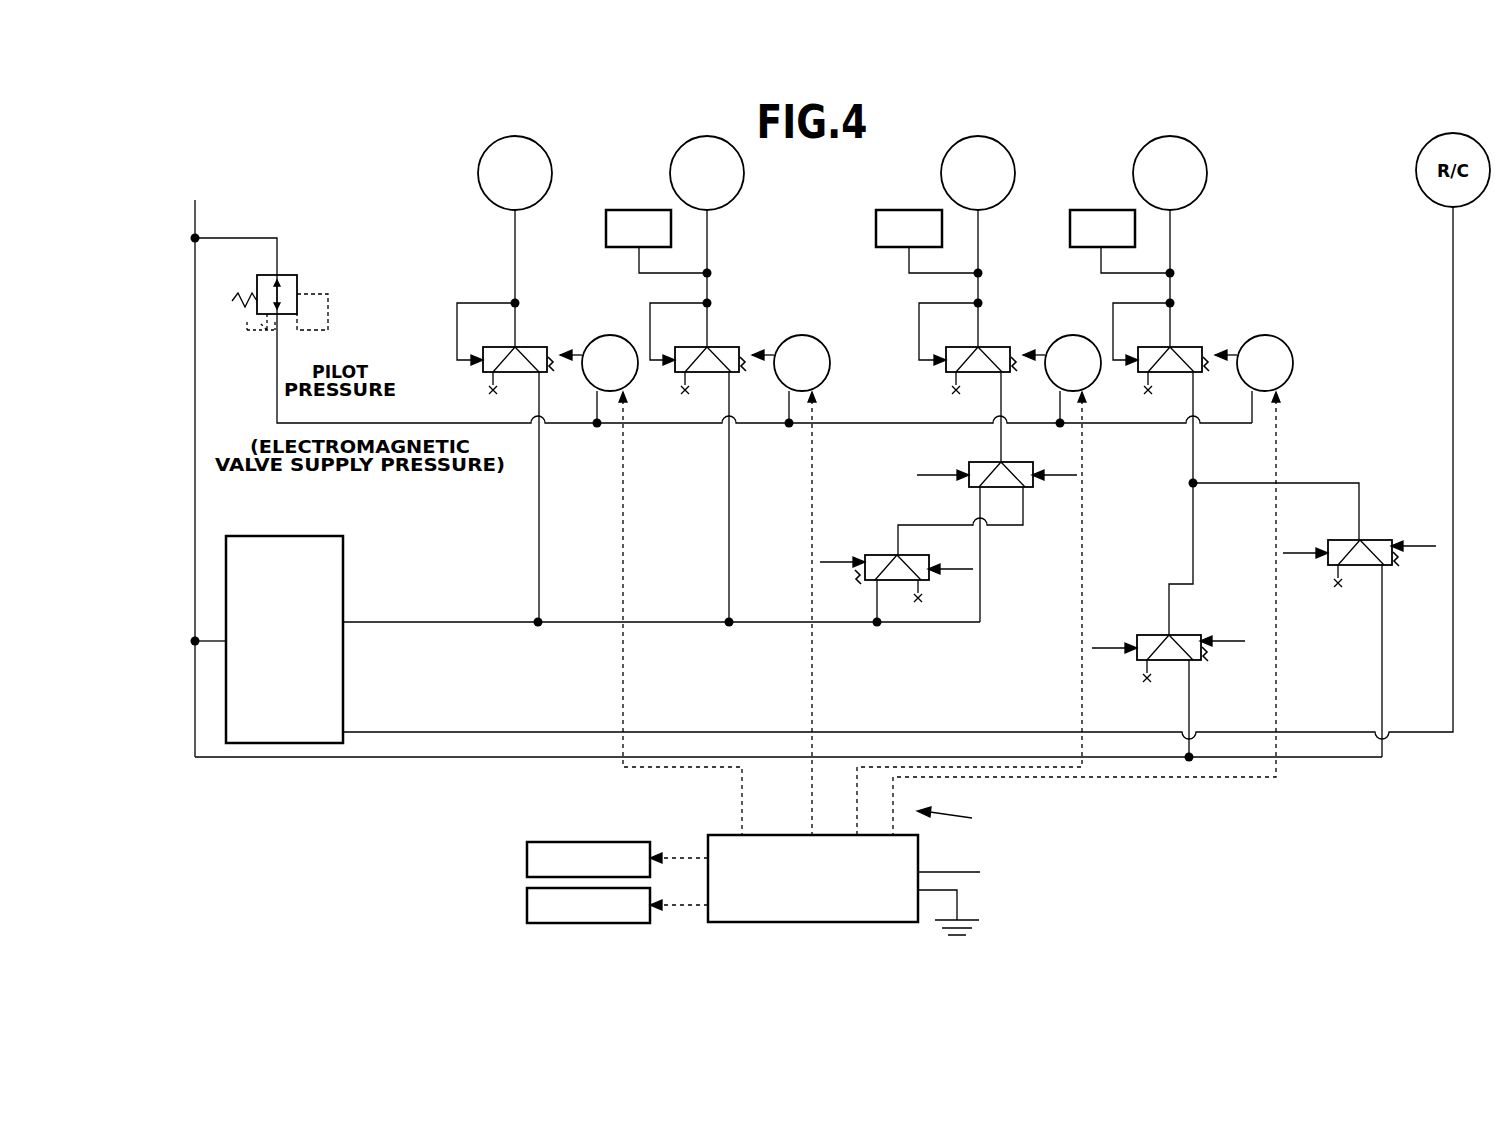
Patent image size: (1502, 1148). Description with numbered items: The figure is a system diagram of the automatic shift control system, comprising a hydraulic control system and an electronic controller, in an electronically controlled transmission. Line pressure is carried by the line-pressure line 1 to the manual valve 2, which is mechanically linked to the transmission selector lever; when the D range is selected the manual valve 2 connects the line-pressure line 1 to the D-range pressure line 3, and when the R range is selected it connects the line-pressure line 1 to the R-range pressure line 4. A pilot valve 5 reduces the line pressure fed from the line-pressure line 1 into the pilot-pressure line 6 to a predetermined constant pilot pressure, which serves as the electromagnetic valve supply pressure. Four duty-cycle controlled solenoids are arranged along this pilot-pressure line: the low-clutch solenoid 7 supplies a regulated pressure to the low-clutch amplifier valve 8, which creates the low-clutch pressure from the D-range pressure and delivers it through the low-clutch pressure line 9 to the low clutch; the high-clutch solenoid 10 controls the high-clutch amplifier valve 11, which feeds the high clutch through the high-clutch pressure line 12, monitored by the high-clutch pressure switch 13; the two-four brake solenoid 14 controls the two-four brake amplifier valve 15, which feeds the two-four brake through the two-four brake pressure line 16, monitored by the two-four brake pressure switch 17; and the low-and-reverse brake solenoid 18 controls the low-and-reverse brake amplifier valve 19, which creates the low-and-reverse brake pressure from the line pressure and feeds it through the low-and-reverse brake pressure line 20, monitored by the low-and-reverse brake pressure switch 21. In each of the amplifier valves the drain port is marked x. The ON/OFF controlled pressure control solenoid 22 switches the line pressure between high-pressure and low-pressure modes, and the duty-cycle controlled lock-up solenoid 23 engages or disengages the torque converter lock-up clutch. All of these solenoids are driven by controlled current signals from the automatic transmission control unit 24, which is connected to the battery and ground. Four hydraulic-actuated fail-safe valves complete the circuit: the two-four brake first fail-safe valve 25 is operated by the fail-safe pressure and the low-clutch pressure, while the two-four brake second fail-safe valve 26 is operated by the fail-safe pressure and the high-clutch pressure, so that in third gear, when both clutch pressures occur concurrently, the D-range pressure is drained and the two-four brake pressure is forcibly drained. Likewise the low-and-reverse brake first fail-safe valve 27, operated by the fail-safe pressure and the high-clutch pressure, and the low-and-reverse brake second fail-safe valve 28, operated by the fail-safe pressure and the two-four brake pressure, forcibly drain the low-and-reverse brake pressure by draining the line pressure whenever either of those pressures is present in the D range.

The line-pressure line 1 is at (197, 381).
The manual valve 2 is at (265, 536).
The D-range pressure line 3 is at (657, 622).
The R-range pressure line 4 is at (657, 732).
The pilot valve 5 is at (297, 275).
The pilot-pressure line 6 is at (277, 368).
The low-clutch solenoid valve 7 is at (610, 335).
The low-clutch amplifier valve 8 is at (485, 372).
The low-clutch pressure line 9 is at (515, 249).
The high-clutch solenoid valve 10 is at (805, 335).
The high-clutch amplifier valve 11 is at (680, 372).
The high-clutch pressure line 12 is at (707, 249).
The high-clutch pressure switch 13 is at (618, 210).
The 2-4 brake solenoid valve 14 is at (1073, 335).
The 2-4 brake amplifier valve 15 is at (945, 371).
The 2-4 brake pressure line 16 is at (978, 249).
The 2-4 brake pressure switch 17 is at (881, 210).
The low-and-reverse brake solenoid valve 18 is at (1265, 335).
The low-and-reverse brake amplifier valve 19 is at (1138, 372).
The low-and-reverse brake pressure line 20 is at (1170, 249).
The low-and-reverse brake pressure switch 21 is at (1073, 210).
The pressure control solenoid 22 is at (527, 853).
The lock-up solenoid 23 is at (527, 898).
The automatic transmission control unit 24 is at (712, 835).
The 2-4/B first fail-safe valve 25 is at (1033, 492).
The 2-4/B second fail-safe valve 26 is at (875, 555).
The low-and-reverse brake first fail-safe valve 27 is at (1330, 566).
The low-and-reverse brake second fail-safe valve 28 is at (1147, 635).